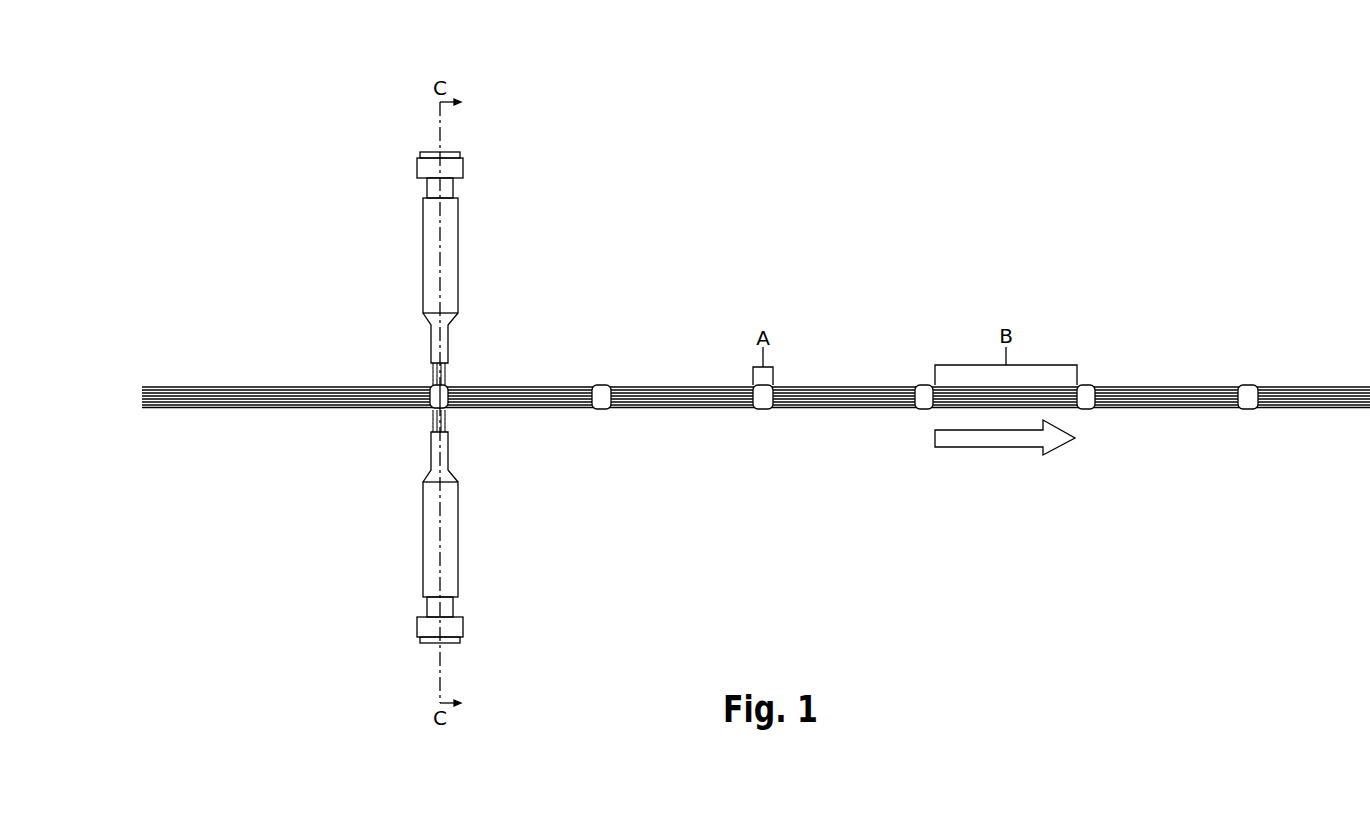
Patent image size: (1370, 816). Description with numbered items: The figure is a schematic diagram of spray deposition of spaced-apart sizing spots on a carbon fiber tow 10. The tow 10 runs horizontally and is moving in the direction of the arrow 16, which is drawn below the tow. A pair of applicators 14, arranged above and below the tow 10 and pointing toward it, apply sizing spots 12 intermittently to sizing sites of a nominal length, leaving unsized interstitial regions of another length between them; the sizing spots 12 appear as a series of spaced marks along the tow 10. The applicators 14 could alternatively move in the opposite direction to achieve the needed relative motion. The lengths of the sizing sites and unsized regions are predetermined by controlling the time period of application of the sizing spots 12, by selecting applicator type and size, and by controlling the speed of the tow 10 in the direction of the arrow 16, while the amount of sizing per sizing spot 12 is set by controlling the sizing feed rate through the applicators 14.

The carbon fiber tow 10 is at (173, 395).
The sizing spots 12 is at (601, 410).
The applicators 14 is at (458, 222).
The arrow 16 is at (1010, 447).